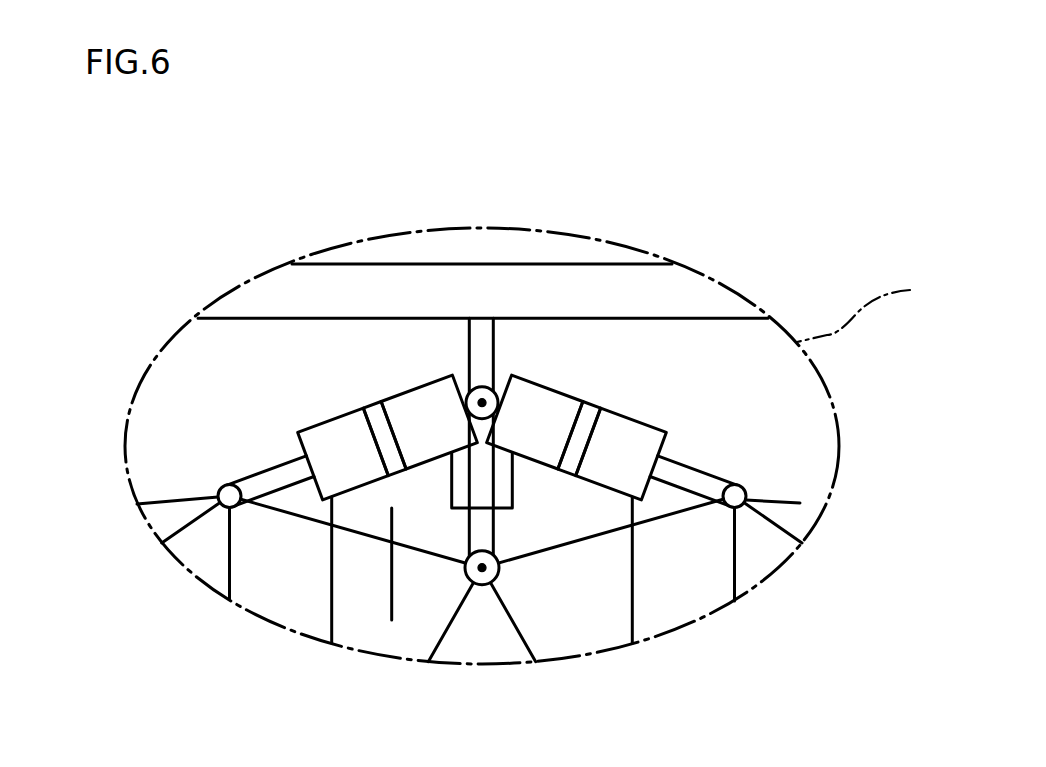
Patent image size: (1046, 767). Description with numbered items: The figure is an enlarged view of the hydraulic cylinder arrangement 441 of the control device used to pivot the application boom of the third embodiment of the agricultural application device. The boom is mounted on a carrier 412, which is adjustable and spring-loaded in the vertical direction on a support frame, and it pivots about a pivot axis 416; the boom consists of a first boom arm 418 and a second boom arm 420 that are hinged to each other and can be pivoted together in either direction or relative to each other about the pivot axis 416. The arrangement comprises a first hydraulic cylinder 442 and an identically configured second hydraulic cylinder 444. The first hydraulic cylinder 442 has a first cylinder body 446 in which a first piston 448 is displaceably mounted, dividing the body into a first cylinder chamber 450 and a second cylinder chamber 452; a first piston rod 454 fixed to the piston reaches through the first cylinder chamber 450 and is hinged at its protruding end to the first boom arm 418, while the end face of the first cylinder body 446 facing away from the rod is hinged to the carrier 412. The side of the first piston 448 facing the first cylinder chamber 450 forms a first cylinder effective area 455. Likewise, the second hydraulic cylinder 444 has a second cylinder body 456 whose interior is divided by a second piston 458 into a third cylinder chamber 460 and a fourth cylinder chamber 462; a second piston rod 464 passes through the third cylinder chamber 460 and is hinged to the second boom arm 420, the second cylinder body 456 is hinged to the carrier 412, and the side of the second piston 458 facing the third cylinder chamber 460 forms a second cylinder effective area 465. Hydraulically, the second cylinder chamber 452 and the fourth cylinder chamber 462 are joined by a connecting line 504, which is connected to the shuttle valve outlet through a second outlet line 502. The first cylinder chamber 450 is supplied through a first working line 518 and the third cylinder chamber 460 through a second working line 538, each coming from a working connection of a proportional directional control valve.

The carrier 412 is at (478, 290).
The pivot axis 416 is at (482, 580).
The first boom arm 418 is at (797, 503).
The second boom arm 420 is at (177, 502).
The hydraulic cylinder arrangement 441 is at (680, 236).
The first hydraulic cylinder 442 is at (573, 360).
The second hydraulic cylinder 444 is at (437, 350).
The first cylinder body 446 is at (589, 412).
The first piston 448 is at (587, 417).
The first cylinder chamber 450 is at (627, 430).
The second cylinder chamber 452 is at (552, 403).
The first piston rod 454 is at (700, 477).
The first cylinder effective area 455 is at (587, 470).
The second cylinder body 456 is at (293, 442).
The second piston 458 is at (368, 418).
The third cylinder chamber 460 is at (318, 430).
The fourth cylinder chamber 462 is at (412, 403).
The second piston rod 464 is at (265, 482).
The second cylinder effective area 465 is at (320, 500).
The second outlet line 502 is at (390, 620).
The connecting line 504 is at (513, 482).
The first working line 518 is at (633, 592).
The second working line 538 is at (332, 587).